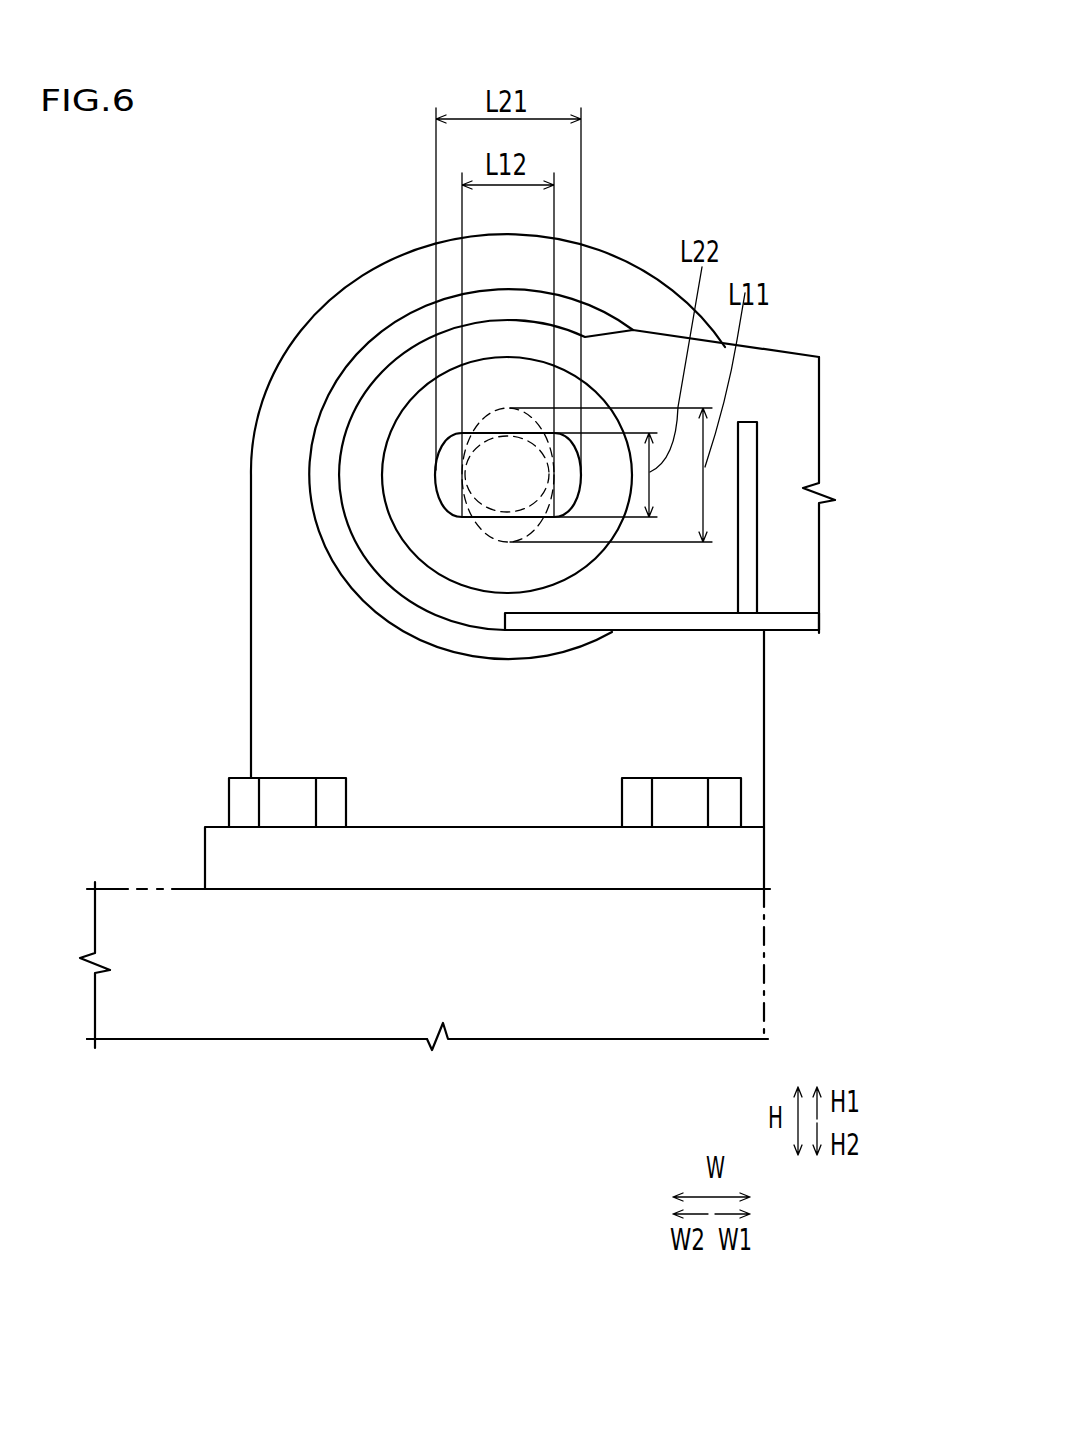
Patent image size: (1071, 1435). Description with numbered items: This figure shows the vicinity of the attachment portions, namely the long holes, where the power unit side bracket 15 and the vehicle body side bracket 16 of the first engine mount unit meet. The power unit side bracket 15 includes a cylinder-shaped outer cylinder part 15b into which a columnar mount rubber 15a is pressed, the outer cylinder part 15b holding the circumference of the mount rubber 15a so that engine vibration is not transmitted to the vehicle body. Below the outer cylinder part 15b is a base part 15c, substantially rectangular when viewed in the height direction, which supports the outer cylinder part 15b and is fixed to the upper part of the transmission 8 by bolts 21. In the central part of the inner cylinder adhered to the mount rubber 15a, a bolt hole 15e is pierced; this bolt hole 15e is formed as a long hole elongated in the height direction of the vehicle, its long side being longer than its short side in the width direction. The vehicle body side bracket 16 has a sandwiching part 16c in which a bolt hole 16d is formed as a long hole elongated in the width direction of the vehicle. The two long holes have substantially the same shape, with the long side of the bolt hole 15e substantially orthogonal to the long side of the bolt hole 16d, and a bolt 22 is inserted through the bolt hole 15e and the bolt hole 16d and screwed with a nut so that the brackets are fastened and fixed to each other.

The power unit side bracket 15 is at (247, 263).
The mount rubber 15a is at (346, 393).
The outer cylinder part 15b is at (348, 290).
The base part 15c is at (717, 855).
The bolt hole 15e is at (470, 531).
The vehicle body side bracket 16 is at (796, 262).
The sandwiching part 16c is at (602, 350).
The bolt hole 16d is at (446, 497).
The bolt 21 is at (331, 778).
The bolt 22 is at (515, 517).
The transmission 8 is at (125, 889).